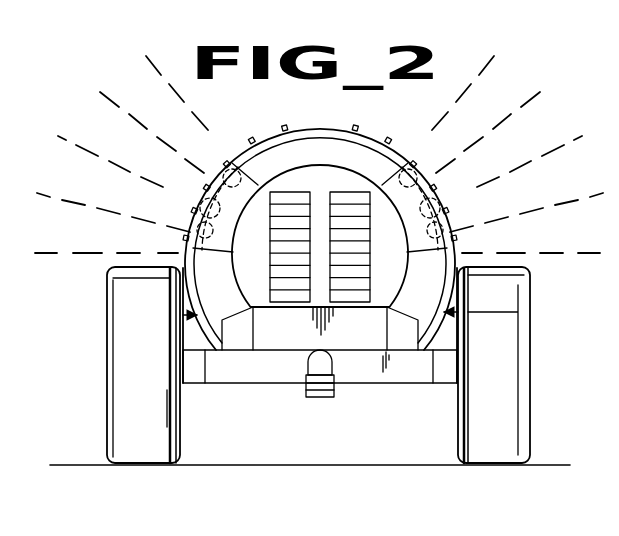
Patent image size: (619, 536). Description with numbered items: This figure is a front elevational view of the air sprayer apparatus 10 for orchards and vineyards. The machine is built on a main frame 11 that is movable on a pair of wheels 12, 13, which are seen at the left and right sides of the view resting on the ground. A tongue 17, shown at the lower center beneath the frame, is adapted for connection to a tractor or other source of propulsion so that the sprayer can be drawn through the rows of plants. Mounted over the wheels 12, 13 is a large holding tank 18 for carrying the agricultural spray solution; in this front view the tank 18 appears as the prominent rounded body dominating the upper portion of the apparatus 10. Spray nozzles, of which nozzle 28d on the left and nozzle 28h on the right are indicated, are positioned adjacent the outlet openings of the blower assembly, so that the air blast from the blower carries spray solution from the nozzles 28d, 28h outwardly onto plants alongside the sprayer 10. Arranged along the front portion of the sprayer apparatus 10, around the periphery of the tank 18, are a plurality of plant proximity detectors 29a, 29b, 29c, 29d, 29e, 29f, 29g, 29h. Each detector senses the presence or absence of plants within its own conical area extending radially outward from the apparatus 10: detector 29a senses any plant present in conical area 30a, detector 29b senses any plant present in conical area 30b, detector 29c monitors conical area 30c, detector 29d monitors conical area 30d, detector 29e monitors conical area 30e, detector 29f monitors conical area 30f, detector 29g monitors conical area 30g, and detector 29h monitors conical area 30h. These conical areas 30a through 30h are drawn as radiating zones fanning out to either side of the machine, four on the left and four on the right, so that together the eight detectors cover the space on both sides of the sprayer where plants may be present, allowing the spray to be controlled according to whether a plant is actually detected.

The air sprayer apparatus 10 is at (95, 267).
The main frame 11 is at (392, 380).
The wheel 12 is at (107, 373).
The wheel 13 is at (530, 373).
The tongue 17 is at (306, 388).
The holding tank 18 is at (315, 129).
The spray nozzle 28d is at (178, 312).
The spray nozzle 28h is at (465, 271).
The plant proximity detector 29a is at (236, 152).
The plant proximity detector 29b is at (200, 187).
The plant proximity detector 29c is at (190, 209).
The plant proximity detector 29d is at (182, 238).
The plant proximity detector 29e is at (431, 152).
The plant proximity detector 29f is at (440, 182).
The plant proximity detector 29g is at (450, 212).
The plant proximity detector 29h is at (460, 237).
The conical area 30a is at (175, 94).
The conical area 30b is at (152, 132).
The conical area 30c is at (110, 167).
The conical area 30d is at (112, 223).
The conical area 30e is at (463, 94).
The conical area 30f is at (488, 132).
The conical area 30g is at (529, 164).
The conical area 30h is at (526, 223).